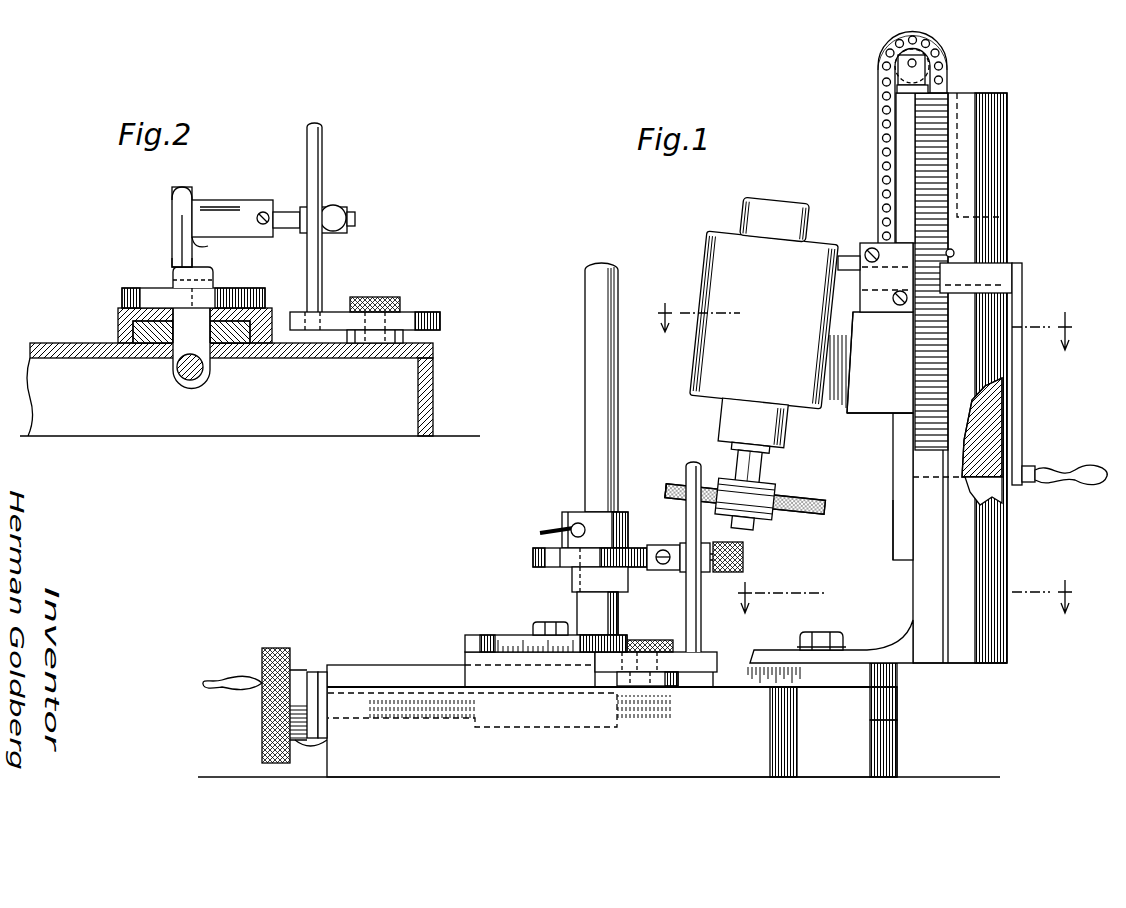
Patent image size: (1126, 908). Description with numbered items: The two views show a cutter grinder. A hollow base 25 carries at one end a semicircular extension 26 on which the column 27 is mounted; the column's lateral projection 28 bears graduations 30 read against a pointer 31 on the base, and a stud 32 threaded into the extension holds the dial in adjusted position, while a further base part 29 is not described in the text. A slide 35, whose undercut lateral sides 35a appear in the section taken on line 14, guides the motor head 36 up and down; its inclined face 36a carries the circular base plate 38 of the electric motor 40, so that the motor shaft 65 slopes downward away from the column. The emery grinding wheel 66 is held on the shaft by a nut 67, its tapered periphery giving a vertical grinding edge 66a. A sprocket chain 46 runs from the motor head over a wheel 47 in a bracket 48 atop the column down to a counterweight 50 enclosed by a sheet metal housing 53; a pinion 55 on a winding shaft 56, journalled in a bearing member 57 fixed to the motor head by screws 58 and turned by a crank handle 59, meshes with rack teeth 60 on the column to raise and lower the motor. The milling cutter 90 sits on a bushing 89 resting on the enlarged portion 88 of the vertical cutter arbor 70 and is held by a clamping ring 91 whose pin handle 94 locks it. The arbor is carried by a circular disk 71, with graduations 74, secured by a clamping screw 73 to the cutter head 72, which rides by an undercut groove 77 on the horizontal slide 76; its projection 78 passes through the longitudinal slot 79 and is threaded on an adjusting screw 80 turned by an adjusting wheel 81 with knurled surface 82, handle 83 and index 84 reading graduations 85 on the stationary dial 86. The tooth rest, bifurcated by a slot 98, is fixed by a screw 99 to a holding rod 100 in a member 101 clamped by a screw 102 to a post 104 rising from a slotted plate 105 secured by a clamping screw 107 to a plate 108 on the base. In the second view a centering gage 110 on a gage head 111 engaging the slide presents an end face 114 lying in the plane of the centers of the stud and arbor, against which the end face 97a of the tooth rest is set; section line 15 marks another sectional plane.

In FIG. 1, the section line 14- 14 is at (868, 325).
In FIG. 1, the section line 15- 15 is at (910, 596).
In FIG. 2, the hollow base 25 is at (64, 343).
In FIG. 1, the hollow base 25 is at (599, 732).
In FIG. 1, the semicircular extension 26 is at (897, 740).
In FIG. 1, the column 27 is at (950, 655).
In FIG. 1, the lateral projection 28 is at (895, 675).
In FIG. 1, the base flange 29 is at (890, 690).
In FIG. 1, the graduations 30 is at (775, 650).
In FIG. 1, the pointer 31 is at (755, 668).
In FIG. 1, the bolt or stud 32 is at (825, 632).
In FIG. 1, the slide 35 is at (895, 455).
In FIG. 1, the lateral sides 35a is at (898, 480).
In FIG. 1, the motor head 36 is at (867, 413).
In FIG. 1, the face 36a is at (847, 405).
In FIG. 1, the circular base plate 38 is at (843, 348).
In FIG. 1, the electric motor 40 is at (705, 250).
In FIG. 1, the flexible sprocket chain 46 is at (875, 140).
In FIG. 1, the wheel 47 is at (918, 32).
In FIG. 1, the bracket 48 is at (918, 70).
In FIG. 1, the counterweight 50 is at (990, 418).
In FIG. 1, the sheet metal housing 53 is at (997, 172).
In FIG. 1, the pinion 55 is at (953, 252).
In FIG. 1, the winding shaft 56 is at (870, 243).
In FIG. 1, the bearing member 57 is at (850, 258).
In FIG. 1, the screws 58 is at (895, 305).
In FIG. 1, the crank handle 59 is at (1025, 300).
In FIG. 1, the rack teeth 60 is at (945, 115).
In FIG. 1, the motor shaft 65 is at (752, 470).
In FIG. 1, the emery grinding wheel 66 is at (800, 514).
In FIG. 1, the grinding edge 66a is at (668, 497).
In FIG. 1, the nut 67 is at (760, 532).
In FIG. 2, the cutter arbor 70 is at (213, 275).
In FIG. 1, the cutter arbor 70 is at (585, 325).
In FIG. 1, the circular disk 71 is at (510, 645).
In FIG. 1, the cutter head 72 is at (465, 652).
In FIG. 1, the clamping screw 73 is at (545, 622).
In FIG. 2, the graduations 74 is at (250, 295).
In FIG. 1, the graduations 74 is at (482, 637).
In FIG. 2, the horizontal slide 76 is at (118, 318).
In FIG. 1, the horizontal slide 76 is at (395, 668).
In FIG. 2, the undercut groove 77 is at (245, 355).
In FIG. 2, the projection 78 is at (173, 360).
In FIG. 1, the projection 78 is at (525, 727).
In FIG. 2, the longitudinal slot 79 is at (210, 375).
In FIG. 2, the adjusting screw 80 is at (190, 372).
In FIG. 1, the adjusting screw 80 is at (440, 718).
In FIG. 1, the adjusting wheel 81 is at (298, 672).
In FIG. 1, the knurled surface 82 is at (272, 648).
In FIG. 1, the operating handle 83 is at (225, 680).
In FIG. 1, the index 84 is at (312, 672).
In FIG. 1, the graduations 85 is at (322, 672).
In FIG. 1, the stationary dial 86 is at (312, 748).
In FIG. 1, the enlarged portion 88 is at (618, 612).
In FIG. 1, the bushing 89 is at (628, 583).
In FIG. 1, the disk cutter 90 is at (533, 557).
In FIG. 1, the clamping ring 91 is at (628, 532).
In FIG. 1, the handle 94 is at (540, 532).
In FIG. 2, the end face 97a is at (210, 244).
In FIG. 2, the slot 98 is at (222, 207).
In FIG. 2, the screw 99 is at (263, 212).
In FIG. 2, the holding rod 100 is at (285, 212).
In FIG. 2, the member 101 is at (340, 212).
In FIG. 1, the clamping screw 102 is at (745, 567).
In FIG. 2, the vertical supporting post 104 is at (322, 170).
In FIG. 1, the vertical supporting post 104 is at (692, 465).
In FIG. 2, the horizontal supporting plate 105 is at (430, 312).
In FIG. 1, the horizontal supporting plate 105 is at (690, 662).
In FIG. 2, the clamping screw 107 is at (375, 297).
In FIG. 1, the clamping screw 107 is at (650, 642).
In FIG. 2, the plate 108 is at (405, 338).
In FIG. 1, the plate 108 is at (670, 690).
In FIG. 2, the centering gage 110 is at (172, 250).
In FIG. 2, the gage head 111 is at (170, 285).
In FIG. 2, the end face 114 is at (188, 188).